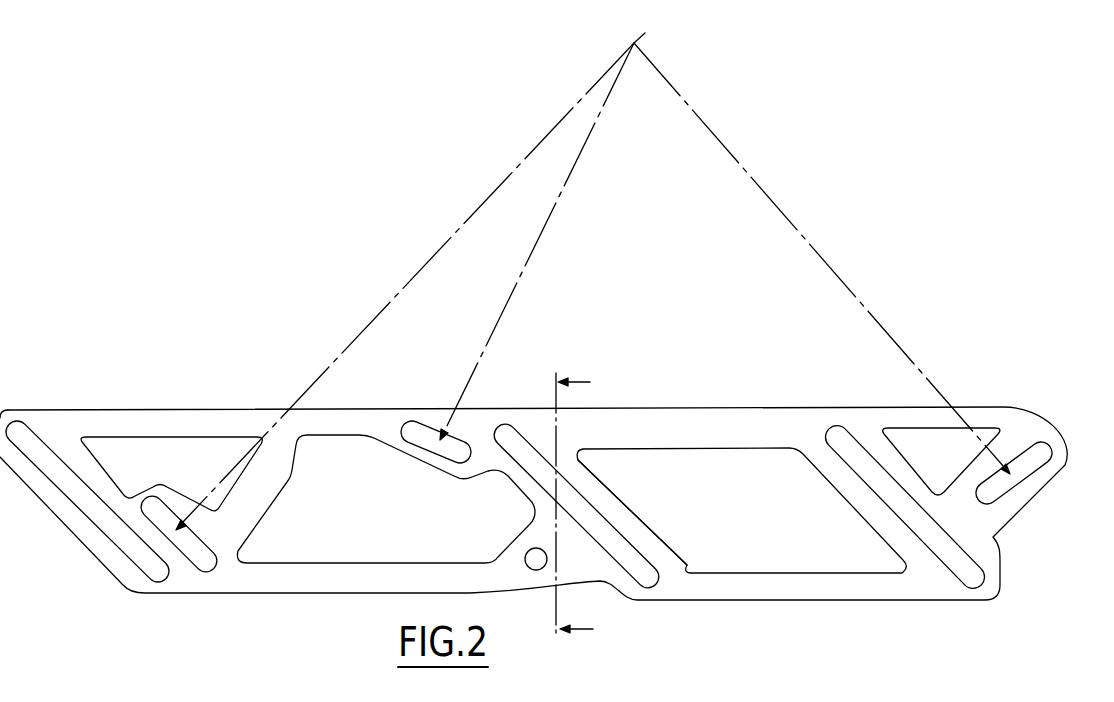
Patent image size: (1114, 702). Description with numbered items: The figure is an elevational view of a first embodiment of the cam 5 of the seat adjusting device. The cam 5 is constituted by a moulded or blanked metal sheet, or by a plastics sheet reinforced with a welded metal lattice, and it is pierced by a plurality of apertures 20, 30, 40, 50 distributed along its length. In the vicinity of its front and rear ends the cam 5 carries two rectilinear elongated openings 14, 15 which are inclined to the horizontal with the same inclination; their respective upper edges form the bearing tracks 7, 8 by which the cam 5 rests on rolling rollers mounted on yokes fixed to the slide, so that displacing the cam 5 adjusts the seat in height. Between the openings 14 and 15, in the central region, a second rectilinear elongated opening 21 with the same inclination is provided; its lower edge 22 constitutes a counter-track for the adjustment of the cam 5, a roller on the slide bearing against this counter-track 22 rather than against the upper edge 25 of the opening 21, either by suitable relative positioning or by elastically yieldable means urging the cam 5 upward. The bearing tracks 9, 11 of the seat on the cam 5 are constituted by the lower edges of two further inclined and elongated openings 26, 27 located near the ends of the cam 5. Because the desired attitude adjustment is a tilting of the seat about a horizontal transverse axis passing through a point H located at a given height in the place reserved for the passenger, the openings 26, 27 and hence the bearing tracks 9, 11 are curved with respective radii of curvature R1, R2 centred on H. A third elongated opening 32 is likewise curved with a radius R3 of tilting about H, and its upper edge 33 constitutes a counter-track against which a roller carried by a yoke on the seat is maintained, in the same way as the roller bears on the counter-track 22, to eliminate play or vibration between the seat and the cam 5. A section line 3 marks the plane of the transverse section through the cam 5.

The section line 3- 3 is at (590, 507).
The cam 5 is at (302, 328).
The bearing track 7 is at (107, 505).
The bearing track 8 is at (905, 507).
The bearing track 9 is at (182, 548).
The bearing track 11 is at (1013, 512).
The rectilinear elongated opening 14 is at (70, 493).
The rectilinear elongated opening 15 is at (912, 515).
The aperture 20 is at (345, 540).
The second rectilinear elongated opening 21 is at (628, 518).
The lower edge / counter-track 22 is at (577, 522).
The upper edge 25 is at (606, 506).
The inclined elongated opening 26 is at (187, 575).
The inclined elongated opening 27 is at (1028, 472).
The aperture 30 is at (753, 560).
The third elongated opening 32 is at (420, 440).
The upper edge / counter-track 33 is at (423, 471).
The aperture 40 is at (903, 440).
The aperture 50 is at (165, 453).
The point H is at (637, 62).
The radius of curvature R1 is at (405, 286).
The radius of curvature R2 is at (822, 258).
The radius R3 is at (537, 241).